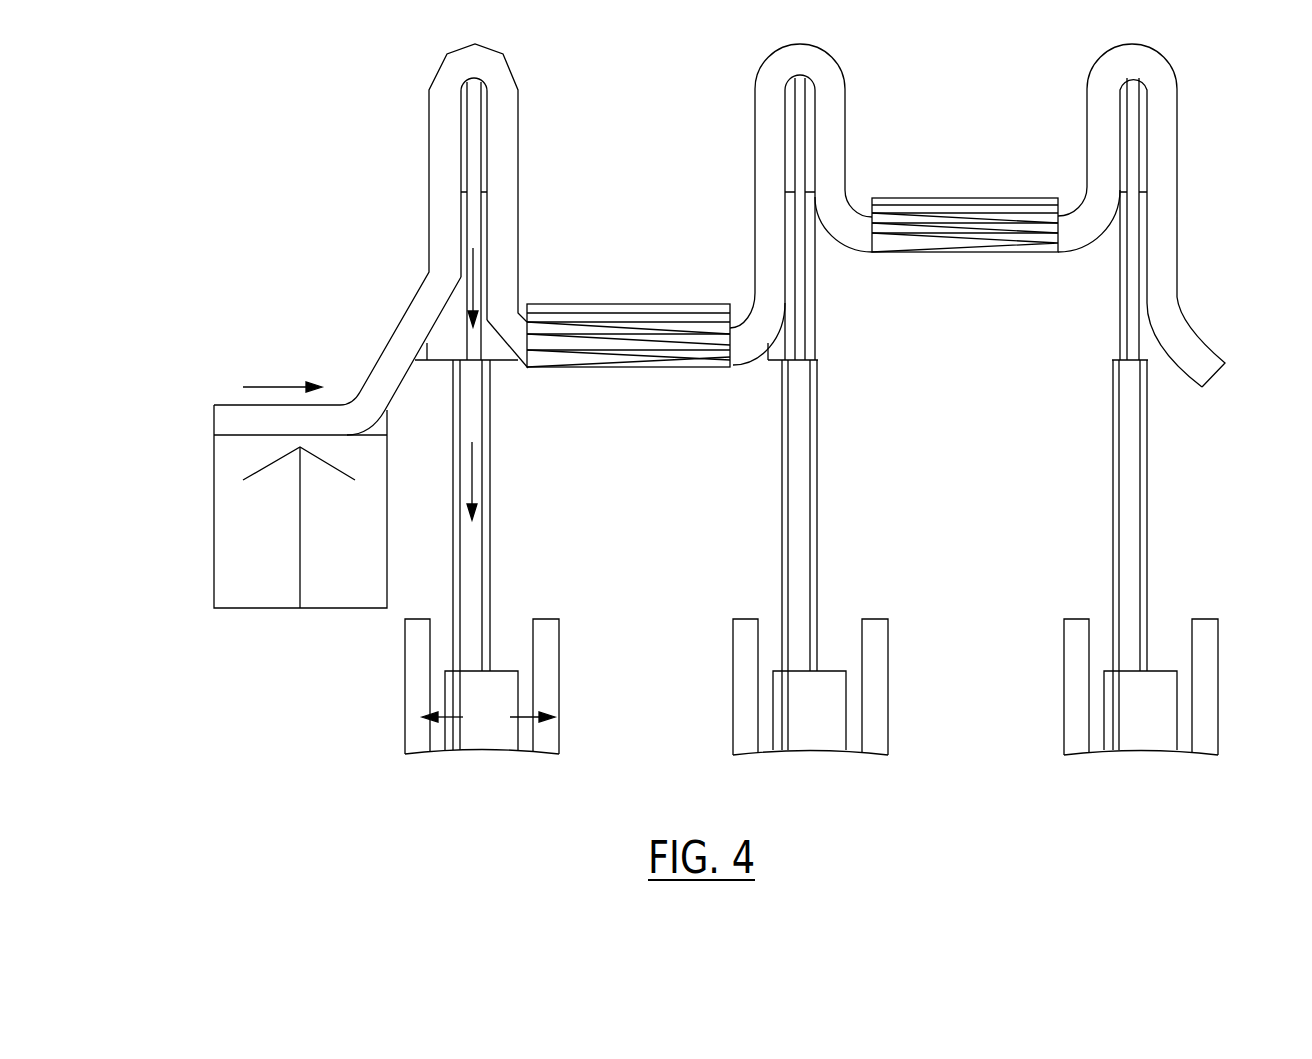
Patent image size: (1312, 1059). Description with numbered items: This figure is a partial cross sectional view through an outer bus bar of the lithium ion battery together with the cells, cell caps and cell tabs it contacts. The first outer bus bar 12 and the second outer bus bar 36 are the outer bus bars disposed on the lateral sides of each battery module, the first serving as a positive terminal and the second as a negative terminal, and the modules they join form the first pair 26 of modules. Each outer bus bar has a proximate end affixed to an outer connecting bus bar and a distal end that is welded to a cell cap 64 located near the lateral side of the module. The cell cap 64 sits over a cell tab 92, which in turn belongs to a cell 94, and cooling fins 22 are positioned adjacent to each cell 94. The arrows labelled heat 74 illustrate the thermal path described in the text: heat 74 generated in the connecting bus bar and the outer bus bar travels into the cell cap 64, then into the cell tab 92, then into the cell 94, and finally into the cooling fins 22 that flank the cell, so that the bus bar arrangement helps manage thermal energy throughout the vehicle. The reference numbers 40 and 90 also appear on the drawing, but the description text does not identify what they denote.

The first outer bus bar 12 is at (257, 506).
The second outer bus bar 36 is at (257, 506).
The first pair of modules 26 is at (257, 506).
The enclosure 40 is at (214, 532).
The inlet 90 is at (214, 403).
The heat 74 is at (272, 383).
The cell cap 64 is at (518, 238).
The cell tab 92 is at (474, 138).
The cell 94 is at (490, 508).
The cooling fins 22 is at (405, 662).